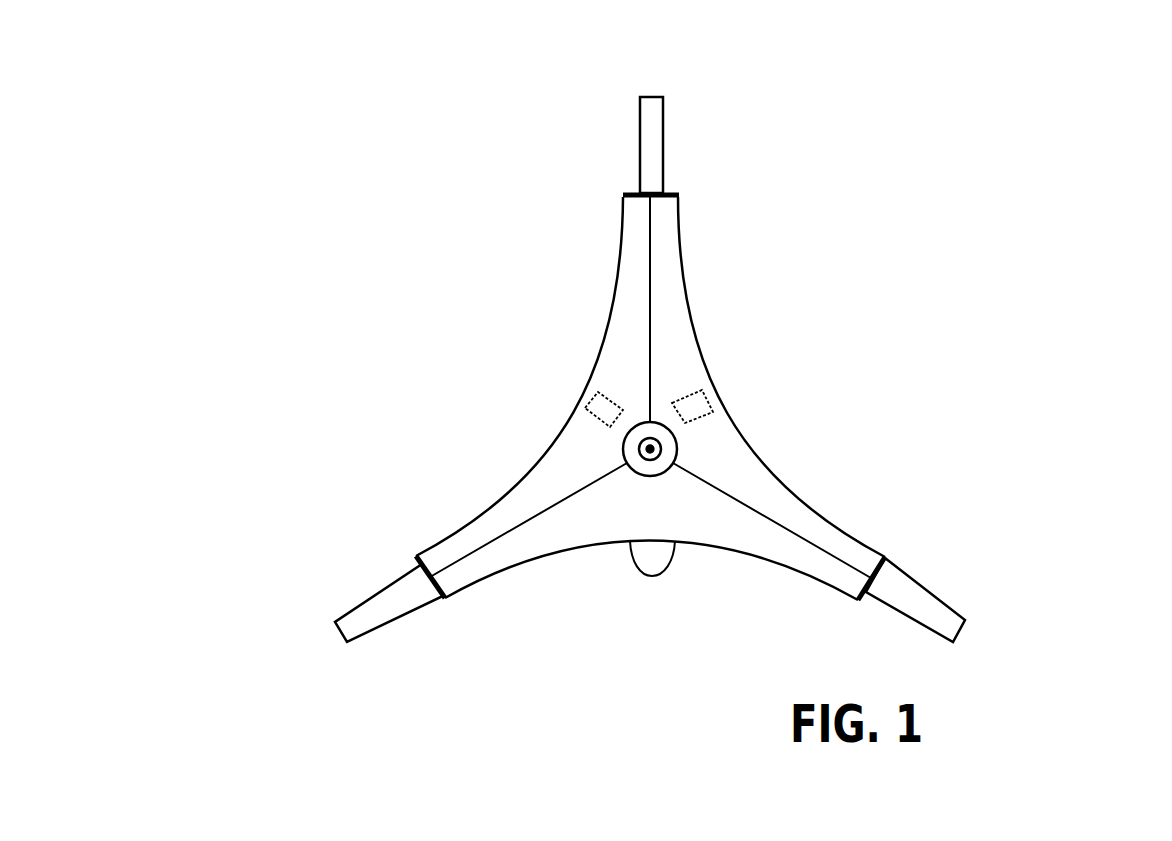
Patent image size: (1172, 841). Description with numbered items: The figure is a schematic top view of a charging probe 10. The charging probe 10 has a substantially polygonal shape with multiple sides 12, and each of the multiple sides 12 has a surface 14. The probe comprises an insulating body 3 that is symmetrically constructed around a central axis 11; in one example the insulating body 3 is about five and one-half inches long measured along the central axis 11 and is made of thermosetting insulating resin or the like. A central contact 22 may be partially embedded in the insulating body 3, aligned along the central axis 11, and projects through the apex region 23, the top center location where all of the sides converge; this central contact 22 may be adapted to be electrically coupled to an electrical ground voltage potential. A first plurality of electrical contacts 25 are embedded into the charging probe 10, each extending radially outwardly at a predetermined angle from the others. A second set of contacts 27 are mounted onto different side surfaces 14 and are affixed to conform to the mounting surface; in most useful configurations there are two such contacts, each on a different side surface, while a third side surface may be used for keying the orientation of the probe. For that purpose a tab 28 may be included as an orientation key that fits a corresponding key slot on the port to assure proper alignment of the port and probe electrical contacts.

The charging probe 10 is at (233, 239).
The insulating body 3 is at (589, 532).
The central axis 11 is at (660, 448).
The sides 12 is at (685, 288).
The surface 14 is at (638, 290).
The central contact 22 is at (653, 446).
The apex region 23 is at (623, 455).
The first plurality of electrical contacts 25 is at (662, 125).
The second set of contacts 27 is at (608, 407).
The tab 28 is at (647, 573).